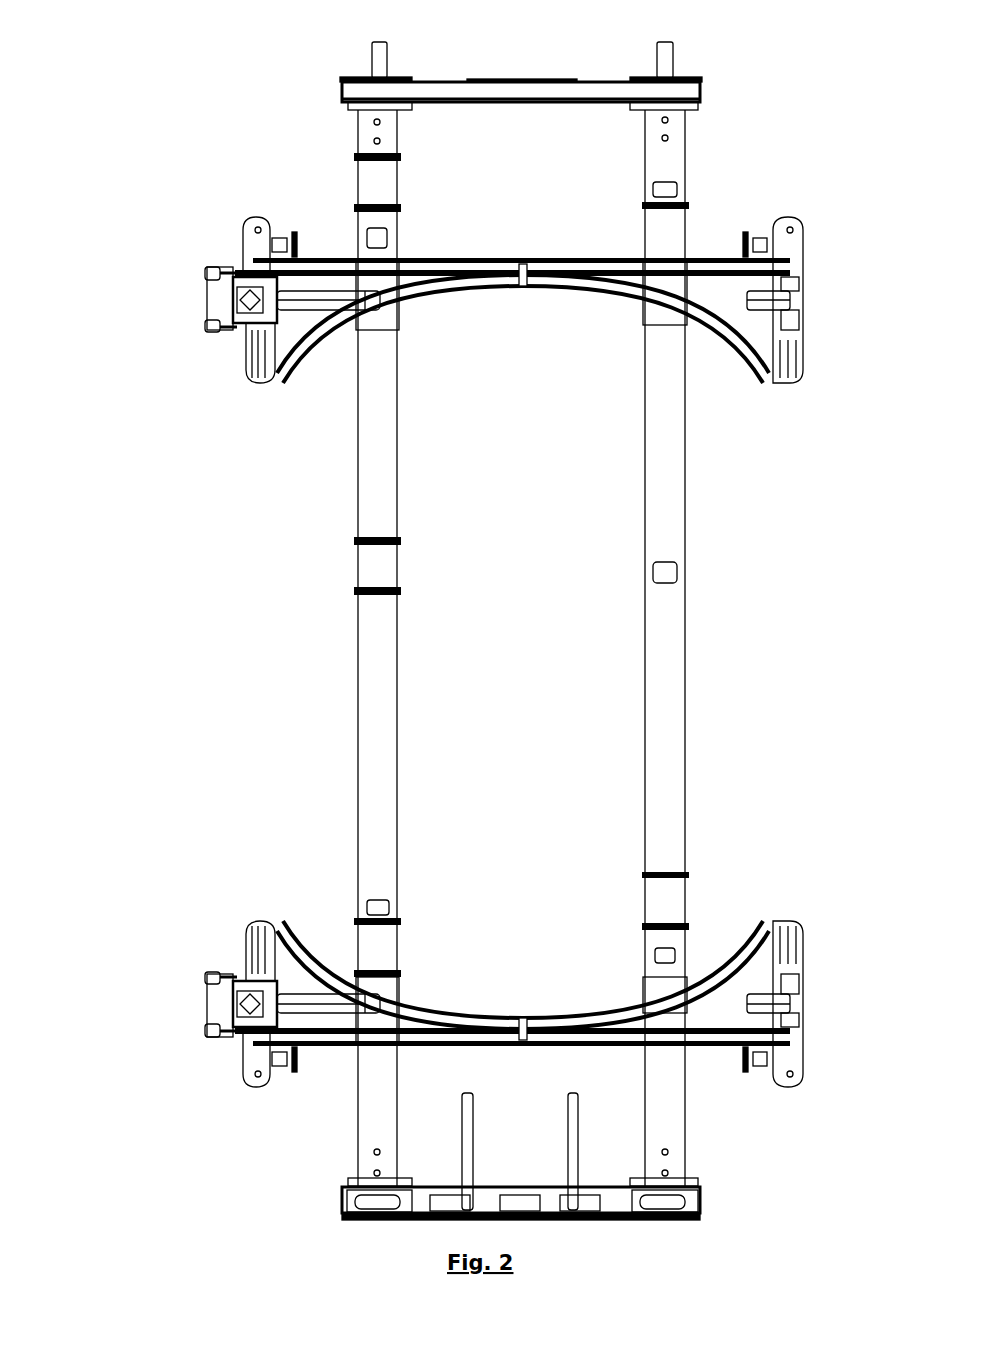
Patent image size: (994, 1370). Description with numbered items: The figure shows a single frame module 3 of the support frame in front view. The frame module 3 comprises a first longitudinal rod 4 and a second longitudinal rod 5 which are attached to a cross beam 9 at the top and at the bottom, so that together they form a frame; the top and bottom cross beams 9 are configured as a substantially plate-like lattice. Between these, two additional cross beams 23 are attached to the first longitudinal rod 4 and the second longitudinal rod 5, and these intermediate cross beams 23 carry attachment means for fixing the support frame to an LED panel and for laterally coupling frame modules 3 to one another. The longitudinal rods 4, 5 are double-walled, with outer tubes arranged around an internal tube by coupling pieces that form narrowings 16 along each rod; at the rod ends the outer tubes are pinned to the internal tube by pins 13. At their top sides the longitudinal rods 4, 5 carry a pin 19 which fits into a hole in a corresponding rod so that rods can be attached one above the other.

The frame module 3 is at (166, 156).
The first longitudinal rod 4 is at (355, 661).
The second longitudinal rod 5 is at (698, 666).
The cross beam 9 is at (707, 101).
The pin 13 is at (373, 122).
The narrowing 16 is at (357, 182).
The pin 19 is at (375, 58).
The additional cross beam 23 is at (712, 247).